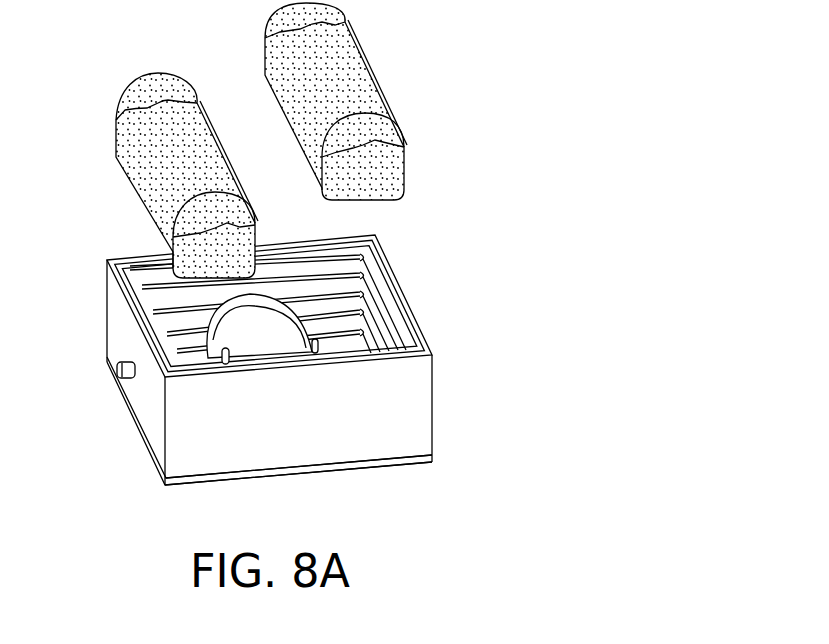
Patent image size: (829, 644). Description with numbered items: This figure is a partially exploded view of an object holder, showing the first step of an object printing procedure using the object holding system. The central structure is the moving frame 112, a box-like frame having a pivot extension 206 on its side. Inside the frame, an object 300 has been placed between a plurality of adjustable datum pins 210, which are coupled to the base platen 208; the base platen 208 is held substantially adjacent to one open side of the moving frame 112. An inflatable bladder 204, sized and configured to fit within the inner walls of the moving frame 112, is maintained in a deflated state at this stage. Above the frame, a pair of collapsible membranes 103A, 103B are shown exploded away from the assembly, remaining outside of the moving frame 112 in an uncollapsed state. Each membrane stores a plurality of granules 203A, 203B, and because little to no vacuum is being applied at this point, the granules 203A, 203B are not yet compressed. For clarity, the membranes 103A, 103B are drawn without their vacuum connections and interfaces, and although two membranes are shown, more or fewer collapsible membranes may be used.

The collapsible membrane 103A is at (193, 158).
The collapsible membrane 103B is at (373, 101).
The granules 203A is at (243, 237).
The granules 203B is at (397, 152).
The object 300 is at (222, 312).
The inflatable bladder 204 is at (378, 302).
The pivot extension 206 is at (117, 370).
The moving frame 112 is at (415, 392).
The base platen 208 is at (437, 462).
The adjustable datum pins 210 is at (216, 357).